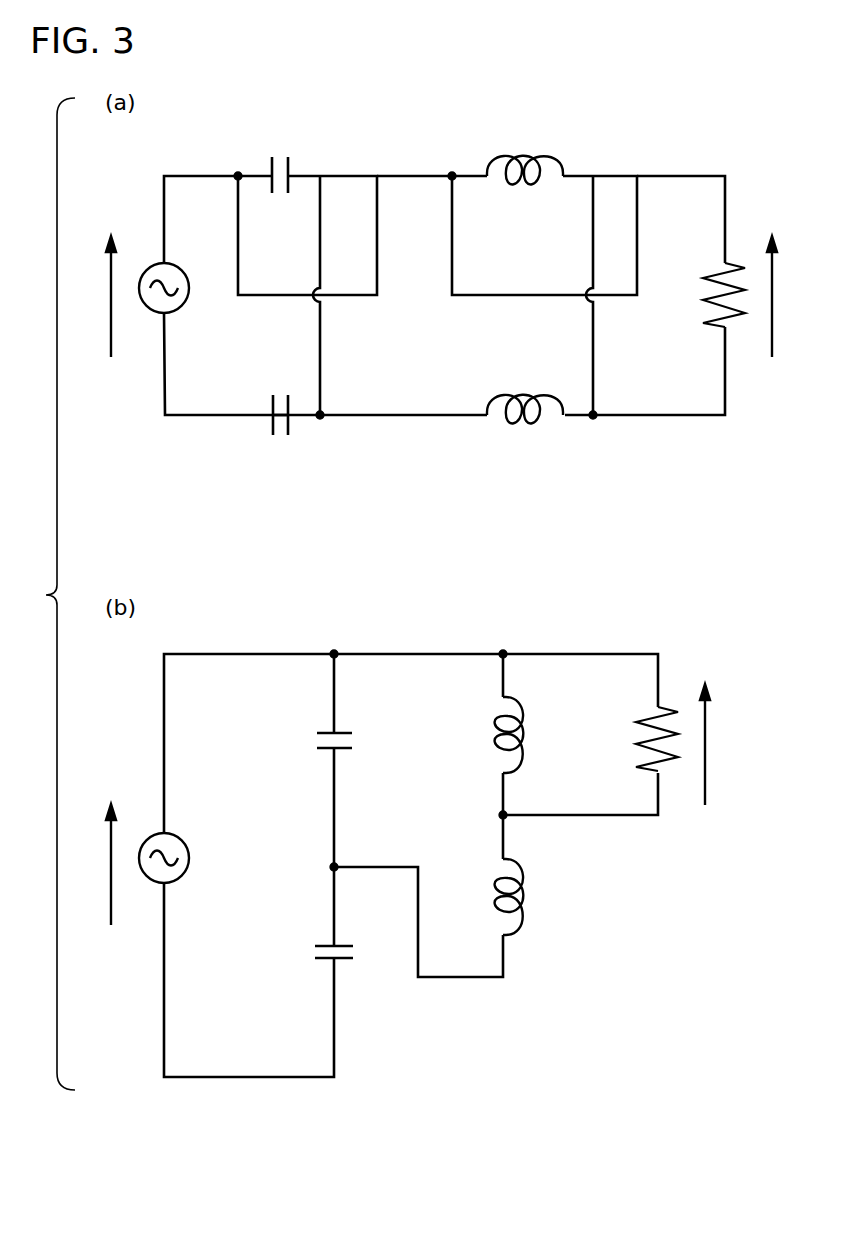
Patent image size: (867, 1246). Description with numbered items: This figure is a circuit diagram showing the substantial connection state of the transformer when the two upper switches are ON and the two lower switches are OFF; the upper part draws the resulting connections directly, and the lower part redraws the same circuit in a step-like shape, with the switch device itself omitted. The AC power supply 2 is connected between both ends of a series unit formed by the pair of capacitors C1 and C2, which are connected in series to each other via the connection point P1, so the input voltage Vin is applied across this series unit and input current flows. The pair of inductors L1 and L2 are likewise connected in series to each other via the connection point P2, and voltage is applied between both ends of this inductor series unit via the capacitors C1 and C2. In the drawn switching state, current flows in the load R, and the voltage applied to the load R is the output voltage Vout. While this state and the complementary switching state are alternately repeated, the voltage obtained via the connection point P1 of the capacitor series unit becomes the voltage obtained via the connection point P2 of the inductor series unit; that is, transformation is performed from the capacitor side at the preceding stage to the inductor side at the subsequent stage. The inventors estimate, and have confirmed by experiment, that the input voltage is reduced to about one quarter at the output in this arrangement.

The AC power supply 2 is at (152, 264).
The capacitor C1 is at (310, 456).
The capacitor C2 is at (310, 666).
The inductor L1 is at (509, 464).
The inductor L2 is at (509, 650).
The load R is at (678, 517).
The connection point P1 is at (322, 418).
The connection point P2 is at (595, 418).
The input voltage Vin is at (96, 580).
The output voltage Vout is at (760, 520).